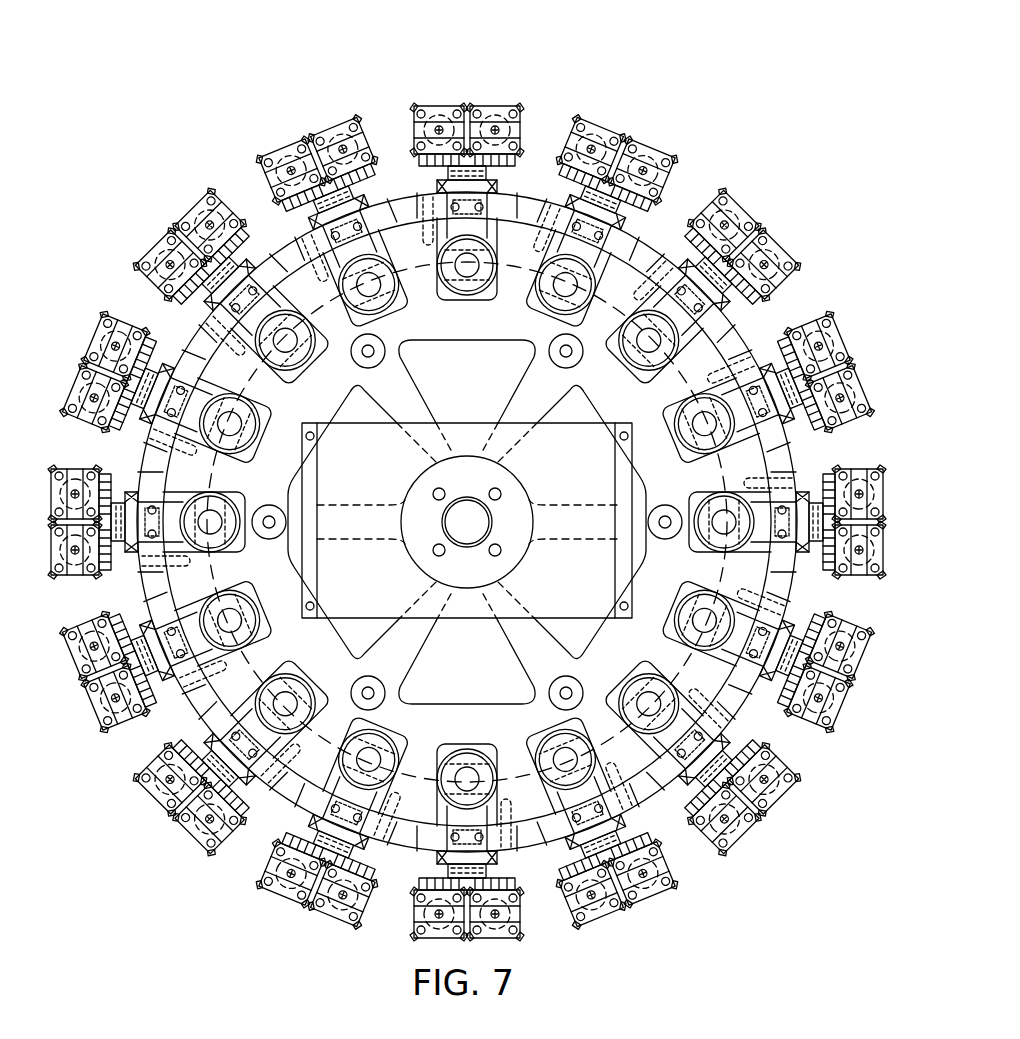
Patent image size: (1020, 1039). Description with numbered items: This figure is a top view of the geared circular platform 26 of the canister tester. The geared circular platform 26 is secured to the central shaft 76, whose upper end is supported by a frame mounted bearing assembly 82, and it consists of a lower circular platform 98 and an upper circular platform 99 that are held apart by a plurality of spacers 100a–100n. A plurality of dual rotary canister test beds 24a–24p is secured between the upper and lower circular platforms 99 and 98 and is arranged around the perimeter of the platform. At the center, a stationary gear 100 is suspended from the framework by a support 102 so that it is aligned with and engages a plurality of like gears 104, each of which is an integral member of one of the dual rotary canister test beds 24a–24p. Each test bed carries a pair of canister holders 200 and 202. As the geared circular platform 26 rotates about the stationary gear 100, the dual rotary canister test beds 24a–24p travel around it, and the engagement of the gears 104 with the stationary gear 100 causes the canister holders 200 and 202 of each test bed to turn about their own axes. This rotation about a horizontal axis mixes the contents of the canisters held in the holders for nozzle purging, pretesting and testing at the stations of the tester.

The dual rotary canister test bed 24a is at (770, 212).
The dual rotary canister test bed 24p is at (648, 128).
The geared circular platform 26 is at (645, 248).
The central shaft 76 is at (481, 532).
The frame mounted bearing assembly 82 is at (515, 497).
The lower circular platform 98 is at (257, 263).
The upper circular platform 99 is at (287, 242).
The stationary gear 100 is at (522, 333).
The spacer 100a is at (275, 495).
The spacer 100n is at (660, 495).
The support 102 is at (503, 575).
The gear 104 is at (402, 303).
The canister holder 200 is at (500, 93).
The canister holder 202 is at (428, 93).